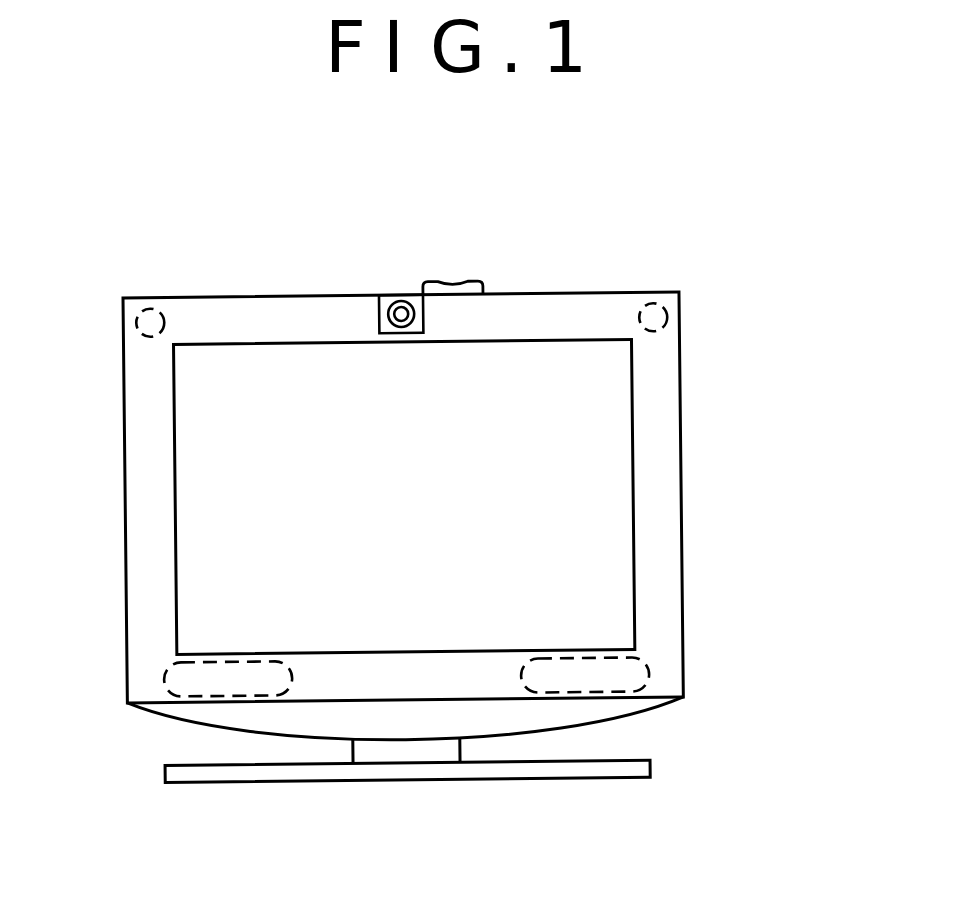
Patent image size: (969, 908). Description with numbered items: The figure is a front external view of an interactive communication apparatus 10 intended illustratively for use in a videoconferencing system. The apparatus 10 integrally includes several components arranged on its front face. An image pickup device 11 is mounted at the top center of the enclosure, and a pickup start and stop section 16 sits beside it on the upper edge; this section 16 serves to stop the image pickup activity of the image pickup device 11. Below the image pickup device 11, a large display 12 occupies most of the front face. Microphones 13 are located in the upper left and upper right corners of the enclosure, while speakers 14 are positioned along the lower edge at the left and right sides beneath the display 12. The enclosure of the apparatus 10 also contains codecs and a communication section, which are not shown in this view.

The interactive communication apparatus 10 is at (822, 602).
The image pickup device 11 is at (397, 297).
The display 12 is at (607, 480).
The microphones 13 is at (152, 296).
The speakers 14 is at (163, 680).
The pickup start and stop section 16 is at (455, 275).